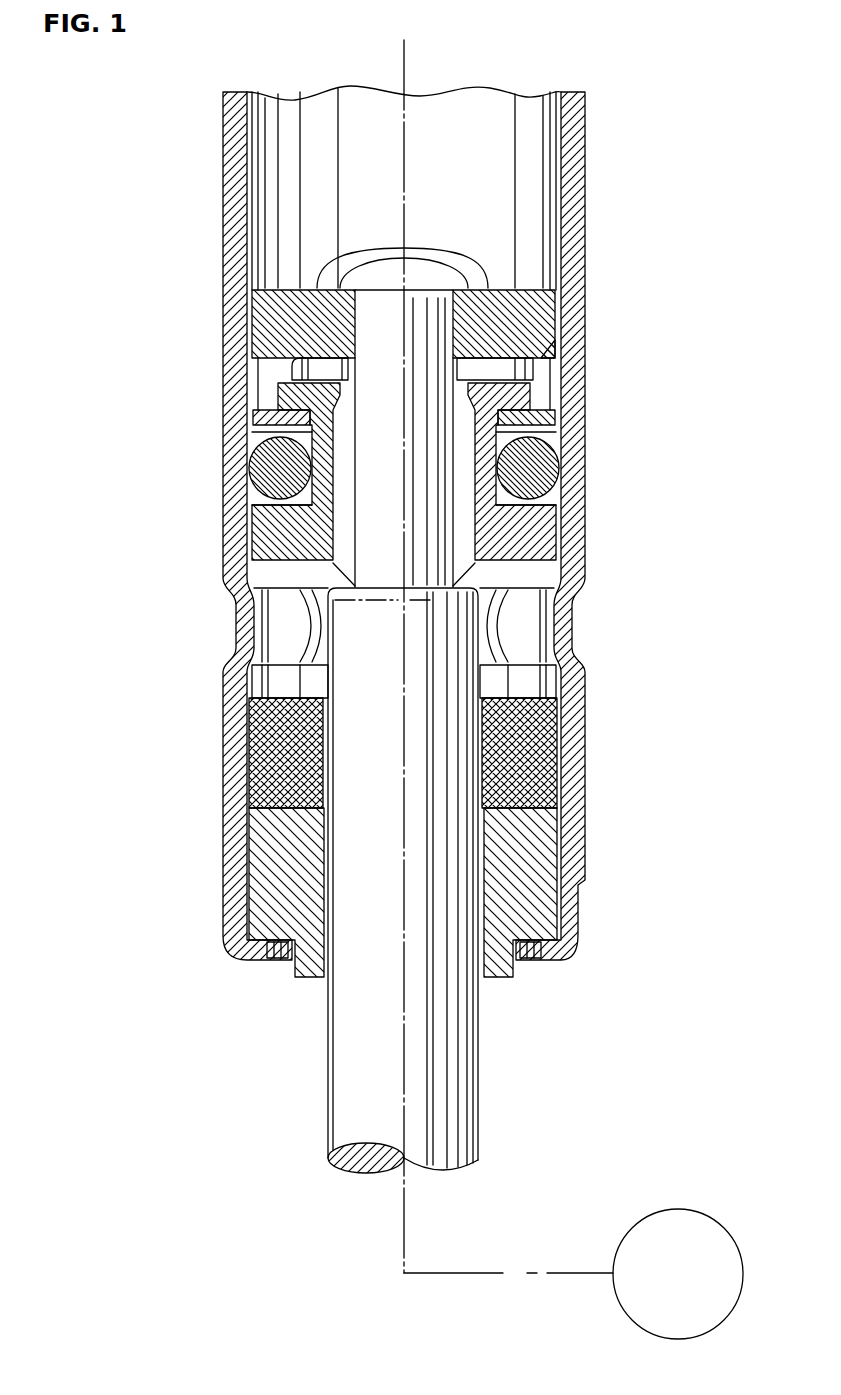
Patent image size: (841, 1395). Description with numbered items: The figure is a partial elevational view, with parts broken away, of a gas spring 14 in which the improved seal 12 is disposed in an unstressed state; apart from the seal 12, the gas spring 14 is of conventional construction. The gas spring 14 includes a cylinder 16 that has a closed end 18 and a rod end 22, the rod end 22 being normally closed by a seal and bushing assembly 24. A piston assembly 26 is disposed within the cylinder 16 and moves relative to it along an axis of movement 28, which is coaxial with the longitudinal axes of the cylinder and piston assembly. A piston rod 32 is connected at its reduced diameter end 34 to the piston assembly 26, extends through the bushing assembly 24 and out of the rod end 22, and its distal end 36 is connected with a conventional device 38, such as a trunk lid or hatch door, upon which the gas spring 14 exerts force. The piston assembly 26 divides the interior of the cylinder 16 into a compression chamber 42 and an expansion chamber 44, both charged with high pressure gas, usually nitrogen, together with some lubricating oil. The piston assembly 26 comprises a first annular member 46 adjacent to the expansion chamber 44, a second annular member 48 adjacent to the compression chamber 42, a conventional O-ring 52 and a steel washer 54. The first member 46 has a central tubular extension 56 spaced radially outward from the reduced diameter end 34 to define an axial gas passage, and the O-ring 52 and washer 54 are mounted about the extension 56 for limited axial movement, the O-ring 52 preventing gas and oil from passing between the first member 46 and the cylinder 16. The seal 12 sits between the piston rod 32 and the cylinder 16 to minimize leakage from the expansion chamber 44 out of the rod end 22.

The seal 12 is at (523, 753).
The gas spring 14 is at (398, 459).
The cylinder 16 is at (577, 277).
The closed end 18 is at (440, 118).
The rod end 22 is at (575, 945).
The seal and bushing assembly 24 is at (270, 853).
The piston assembly 26 is at (287, 392).
The axis of movement 28 is at (403, 68).
The piston rod 32 is at (470, 642).
The reduced diameter end 34 is at (413, 313).
The distal end 36 is at (503, 1273).
The device 38 is at (693, 1289).
The compression chamber 42 is at (487, 224).
The expansion chamber 44 is at (302, 637).
The first annular member 46 is at (540, 545).
The second annular member 48 is at (535, 345).
The O-ring 52 is at (256, 494).
The steel washer 54 is at (262, 438).
The tubular extension 56 is at (540, 402).